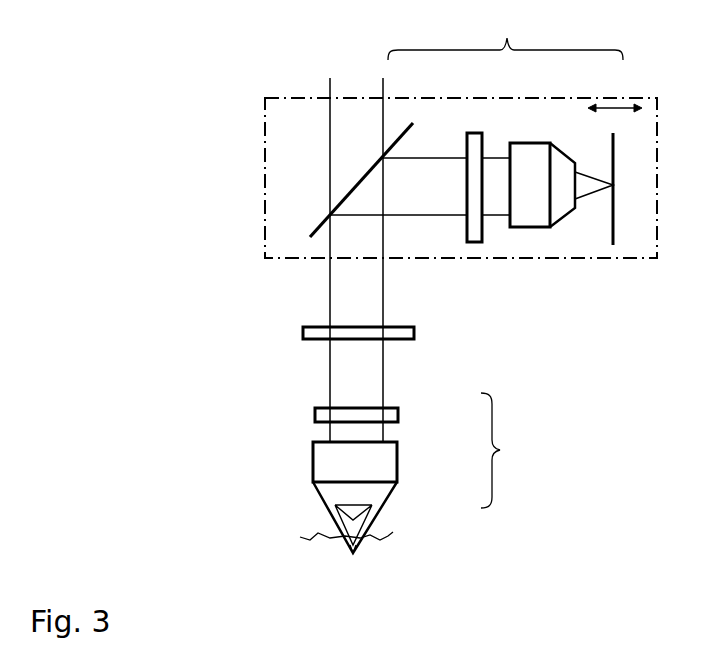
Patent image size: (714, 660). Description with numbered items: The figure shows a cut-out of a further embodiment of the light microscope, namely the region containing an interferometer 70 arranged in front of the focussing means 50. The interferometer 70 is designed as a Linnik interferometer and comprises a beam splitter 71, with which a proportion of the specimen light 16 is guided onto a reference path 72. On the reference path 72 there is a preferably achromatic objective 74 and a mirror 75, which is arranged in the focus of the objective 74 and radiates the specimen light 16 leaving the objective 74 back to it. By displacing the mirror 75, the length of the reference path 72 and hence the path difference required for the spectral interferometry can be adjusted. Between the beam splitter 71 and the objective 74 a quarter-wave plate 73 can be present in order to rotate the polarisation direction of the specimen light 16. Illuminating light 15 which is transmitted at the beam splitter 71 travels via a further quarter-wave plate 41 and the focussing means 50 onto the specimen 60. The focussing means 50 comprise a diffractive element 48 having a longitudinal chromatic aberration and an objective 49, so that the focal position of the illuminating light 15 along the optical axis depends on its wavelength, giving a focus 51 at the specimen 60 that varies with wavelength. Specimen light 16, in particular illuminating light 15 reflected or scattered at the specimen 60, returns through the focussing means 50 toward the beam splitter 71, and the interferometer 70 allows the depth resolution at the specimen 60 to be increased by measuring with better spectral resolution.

The illuminating light 15 is at (352, 115).
The specimen light 16 is at (441, 195).
The λ/4 plate 41 is at (305, 331).
The diffractive element 48 is at (394, 417).
The objective 49 is at (368, 488).
The focussing means 50 is at (505, 450).
The focus 51 is at (358, 547).
The specimen 60 is at (300, 537).
The interferometer 70 is at (265, 115).
The beam splitter 71 is at (328, 216).
The reference path 72 is at (505, 34).
The λ/4 plate 73 is at (473, 135).
The objective 74 is at (537, 213).
The mirror 75 is at (612, 240).